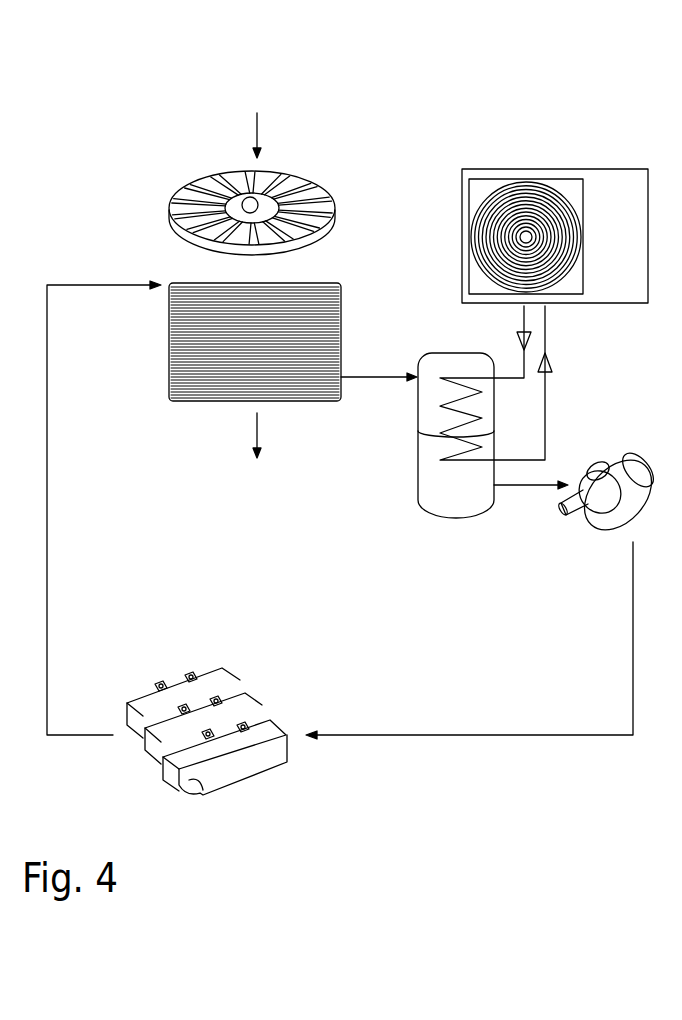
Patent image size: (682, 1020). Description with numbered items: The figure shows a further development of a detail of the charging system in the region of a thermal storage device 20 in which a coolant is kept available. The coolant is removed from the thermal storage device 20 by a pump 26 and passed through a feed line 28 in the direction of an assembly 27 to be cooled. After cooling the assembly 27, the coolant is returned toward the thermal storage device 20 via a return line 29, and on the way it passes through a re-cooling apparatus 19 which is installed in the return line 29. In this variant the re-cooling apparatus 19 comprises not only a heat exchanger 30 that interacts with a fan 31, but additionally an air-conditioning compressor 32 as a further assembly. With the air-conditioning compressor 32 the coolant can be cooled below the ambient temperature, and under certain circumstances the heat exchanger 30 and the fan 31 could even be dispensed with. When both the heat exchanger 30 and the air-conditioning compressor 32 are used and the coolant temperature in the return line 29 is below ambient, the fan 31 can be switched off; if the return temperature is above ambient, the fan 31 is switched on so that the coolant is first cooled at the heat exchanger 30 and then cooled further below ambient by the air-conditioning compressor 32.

The re-cooling apparatus 19 is at (451, 100).
The thermal storage device 20 is at (450, 497).
The pump 26 is at (644, 554).
The assembly to be cooled 27 is at (270, 683).
The feed line 28 is at (473, 737).
The return line 29 is at (47, 435).
The heat exchanger 30 is at (290, 385).
The fan 31 is at (300, 193).
The air-conditioning compressor 32 is at (611, 142).